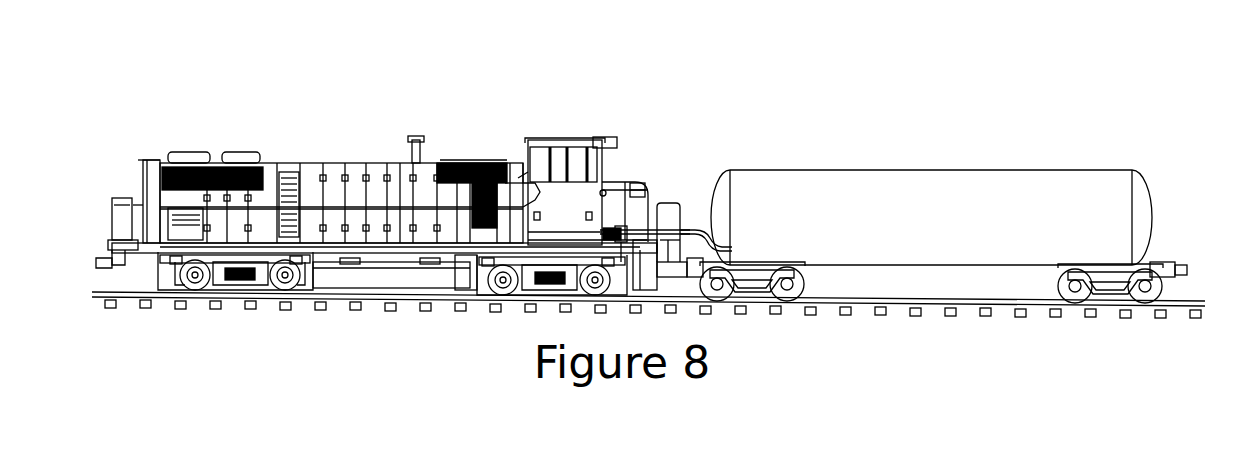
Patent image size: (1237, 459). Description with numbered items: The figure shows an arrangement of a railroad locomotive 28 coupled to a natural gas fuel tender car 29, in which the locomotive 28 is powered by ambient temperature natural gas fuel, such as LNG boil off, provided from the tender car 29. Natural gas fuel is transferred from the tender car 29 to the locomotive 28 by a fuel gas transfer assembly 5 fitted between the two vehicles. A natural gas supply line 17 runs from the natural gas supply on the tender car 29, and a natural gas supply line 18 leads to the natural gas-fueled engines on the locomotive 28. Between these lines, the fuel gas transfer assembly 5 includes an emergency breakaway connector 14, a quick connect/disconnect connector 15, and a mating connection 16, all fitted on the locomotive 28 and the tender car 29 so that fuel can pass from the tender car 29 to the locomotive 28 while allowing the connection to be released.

The fuel gas transfer assembly 5 is at (689, 205).
The emergency breakaway connector 14 is at (612, 233).
The quick connect/disconnect connector 15 is at (640, 192).
The mating connection 16 is at (622, 228).
The natural gas supply line 17 is at (728, 173).
The natural gas supply line 18 is at (434, 158).
The locomotive 28 is at (365, 152).
The tender car 29 is at (796, 168).